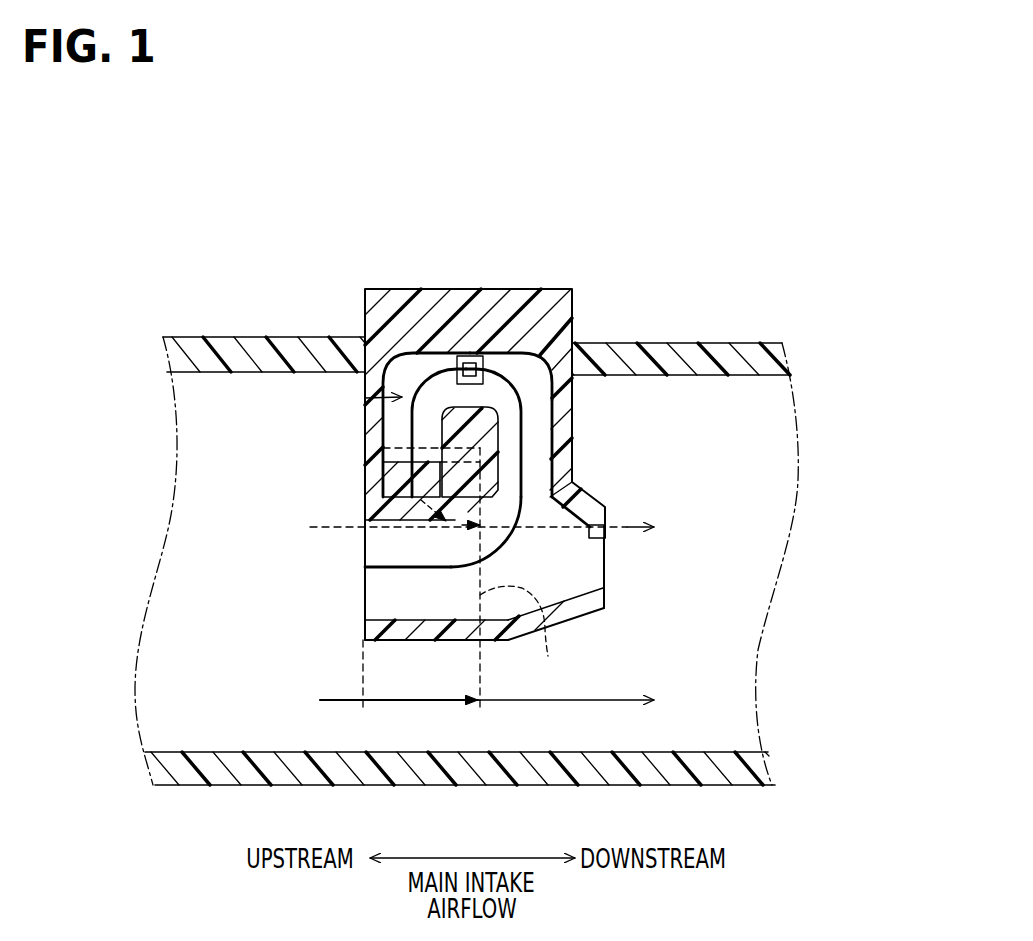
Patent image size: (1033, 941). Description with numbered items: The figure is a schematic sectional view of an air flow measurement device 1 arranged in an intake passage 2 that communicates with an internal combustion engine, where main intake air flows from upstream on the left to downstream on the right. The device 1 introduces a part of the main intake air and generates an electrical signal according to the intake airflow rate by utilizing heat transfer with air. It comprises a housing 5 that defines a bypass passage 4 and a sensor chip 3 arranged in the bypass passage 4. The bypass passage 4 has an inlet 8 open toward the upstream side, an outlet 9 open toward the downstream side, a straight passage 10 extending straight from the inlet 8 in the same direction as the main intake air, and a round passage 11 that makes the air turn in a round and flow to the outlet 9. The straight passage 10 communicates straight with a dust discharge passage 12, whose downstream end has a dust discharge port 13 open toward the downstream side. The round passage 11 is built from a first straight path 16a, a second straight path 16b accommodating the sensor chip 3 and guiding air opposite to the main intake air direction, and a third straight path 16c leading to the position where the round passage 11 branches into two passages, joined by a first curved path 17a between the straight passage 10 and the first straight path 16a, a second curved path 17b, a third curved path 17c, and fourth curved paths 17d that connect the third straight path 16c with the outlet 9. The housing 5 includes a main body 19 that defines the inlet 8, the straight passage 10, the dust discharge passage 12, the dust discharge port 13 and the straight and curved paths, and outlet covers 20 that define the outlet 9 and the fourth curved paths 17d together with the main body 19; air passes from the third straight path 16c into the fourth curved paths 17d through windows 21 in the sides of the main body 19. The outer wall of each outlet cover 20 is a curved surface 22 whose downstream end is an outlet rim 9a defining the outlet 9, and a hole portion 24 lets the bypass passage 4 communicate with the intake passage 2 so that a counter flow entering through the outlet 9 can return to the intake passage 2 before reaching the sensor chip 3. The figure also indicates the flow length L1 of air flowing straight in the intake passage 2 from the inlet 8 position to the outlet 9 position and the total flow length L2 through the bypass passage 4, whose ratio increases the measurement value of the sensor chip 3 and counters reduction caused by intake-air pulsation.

The air flow measurement device 1 is at (619, 212).
The intake passage 2 is at (157, 684).
The sensor chip 3 is at (472, 356).
The bypass passage 4 is at (540, 462).
The housing 5 is at (554, 286).
The inlet 8 is at (365, 568).
The outlet 9 is at (520, 634).
The outlet rim 9a is at (398, 630).
The straight passage 10 is at (422, 605).
The round passage 11 is at (365, 398).
The dust discharge passage 12 is at (577, 589).
The dust discharge port 13 is at (606, 563).
The first straight path 16a is at (540, 420).
The second straight path 16b is at (443, 362).
The third straight path 16c is at (369, 420).
The first curved path 17a is at (512, 520).
The second curved path 17b is at (540, 363).
The third curved path 17c is at (397, 373).
The fourth curved path 17d is at (456, 515).
The main body 19 is at (397, 313).
The outlet cover 20 is at (366, 604).
The window 21 is at (377, 482).
The curved surface 22 is at (366, 632).
The hole portion 24 is at (365, 556).
The flow length of air flowing straight in the intake passage L1 is at (417, 702).
The flow length of air flowing totally in the bypass passage L2 is at (528, 443).